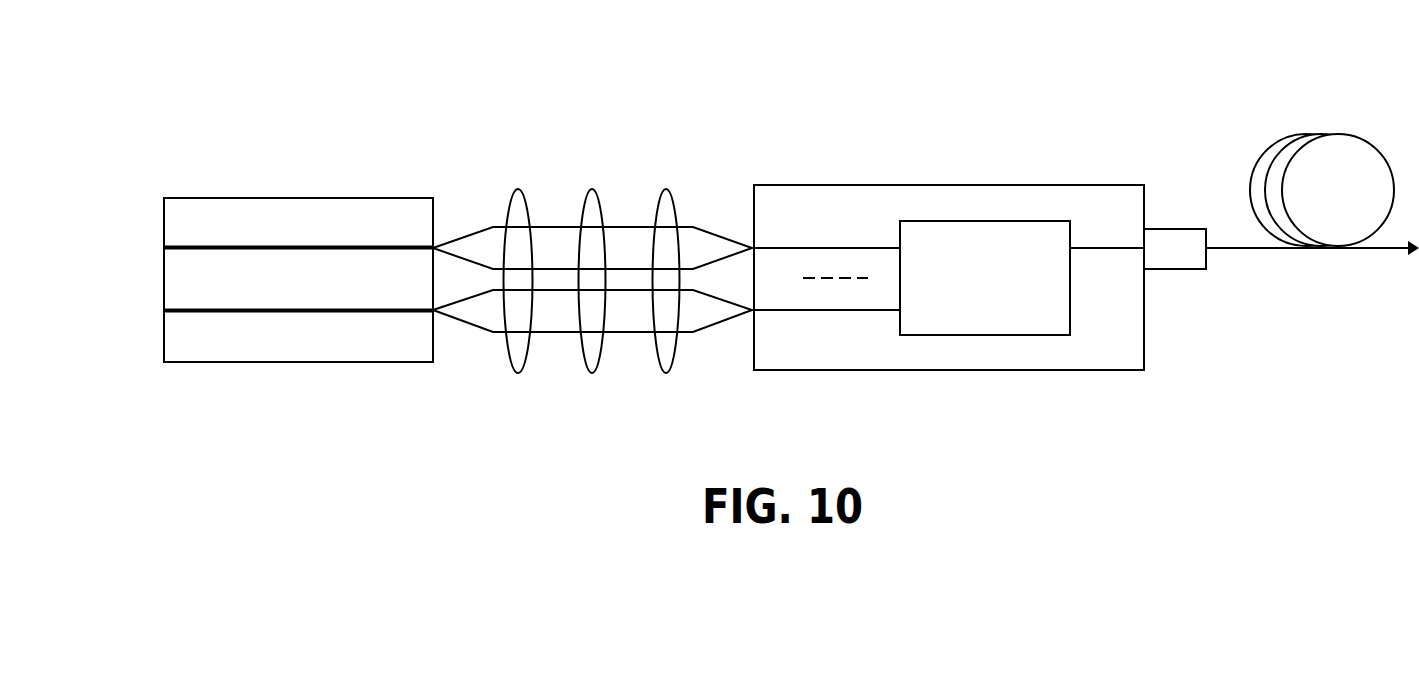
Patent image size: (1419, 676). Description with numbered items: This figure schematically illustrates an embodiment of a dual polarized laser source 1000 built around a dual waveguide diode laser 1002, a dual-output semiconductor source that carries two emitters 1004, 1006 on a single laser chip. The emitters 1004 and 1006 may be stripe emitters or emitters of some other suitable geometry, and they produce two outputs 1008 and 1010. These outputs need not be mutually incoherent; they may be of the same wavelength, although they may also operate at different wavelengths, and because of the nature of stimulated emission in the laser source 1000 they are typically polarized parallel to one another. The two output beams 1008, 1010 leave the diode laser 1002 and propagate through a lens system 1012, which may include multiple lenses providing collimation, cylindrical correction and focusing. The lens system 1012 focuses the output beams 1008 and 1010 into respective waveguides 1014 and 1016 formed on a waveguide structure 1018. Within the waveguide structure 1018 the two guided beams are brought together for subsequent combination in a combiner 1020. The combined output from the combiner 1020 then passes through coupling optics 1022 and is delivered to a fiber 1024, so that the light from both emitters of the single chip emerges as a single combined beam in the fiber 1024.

The dual polarized laser source 1000 is at (382, 74).
The dual waveguide diode laser 1002 is at (261, 220).
The emitter 1004 is at (164, 247).
The emitter 1006 is at (164, 310).
The output beam 1008 is at (632, 243).
The output beam 1010 is at (557, 315).
The lens system 1012 is at (690, 161).
The waveguide 1014 is at (868, 247).
The waveguide 1016 is at (868, 312).
The waveguide structure 1018 is at (972, 358).
The combiner 1020 is at (1003, 235).
The coupling optics 1022 is at (1180, 228).
The fiber 1024 is at (1315, 135).